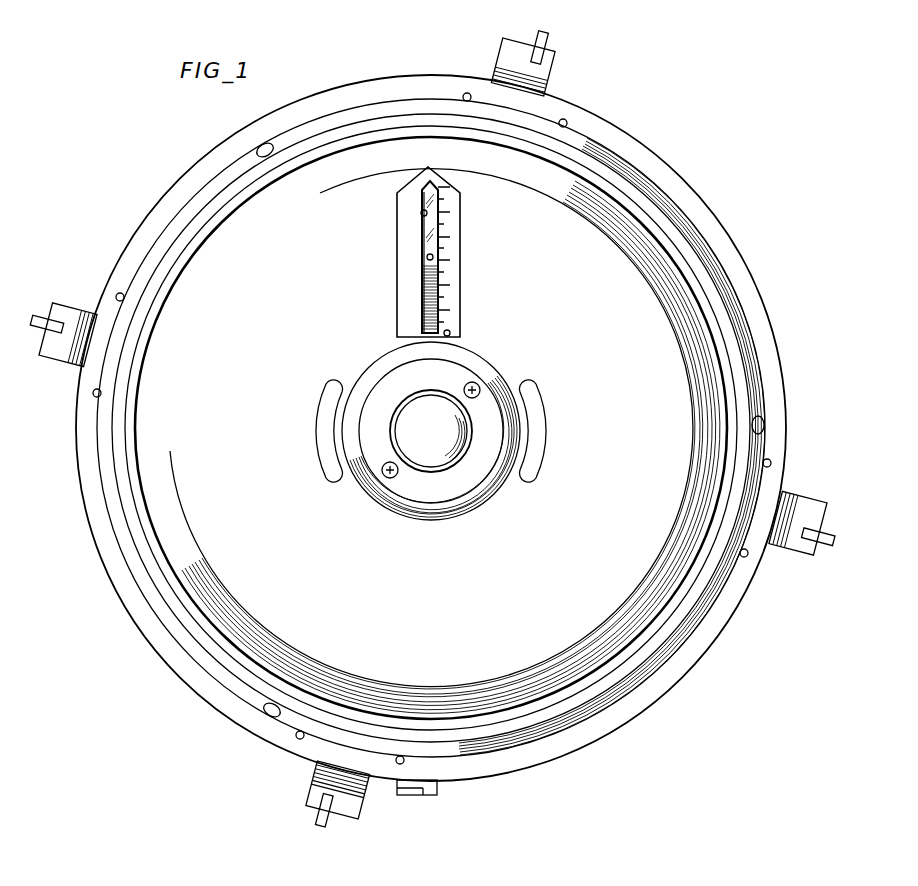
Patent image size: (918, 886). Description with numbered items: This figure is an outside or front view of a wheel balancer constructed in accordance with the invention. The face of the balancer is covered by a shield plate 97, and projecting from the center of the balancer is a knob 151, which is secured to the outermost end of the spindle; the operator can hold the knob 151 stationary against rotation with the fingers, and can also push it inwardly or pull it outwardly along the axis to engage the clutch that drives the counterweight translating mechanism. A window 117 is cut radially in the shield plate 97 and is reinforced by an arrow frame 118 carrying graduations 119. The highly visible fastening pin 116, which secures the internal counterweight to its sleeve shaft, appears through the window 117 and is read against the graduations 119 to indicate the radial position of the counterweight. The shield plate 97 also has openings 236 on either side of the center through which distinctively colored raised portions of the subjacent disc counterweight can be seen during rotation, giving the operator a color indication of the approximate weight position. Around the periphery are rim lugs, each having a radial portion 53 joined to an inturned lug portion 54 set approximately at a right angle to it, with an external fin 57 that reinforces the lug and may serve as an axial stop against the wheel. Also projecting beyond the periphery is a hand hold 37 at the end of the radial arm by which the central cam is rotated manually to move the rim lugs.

The shield plate 97 is at (356, 577).
The knob 151 is at (445, 424).
The openings 236 is at (321, 426).
The arrow frame 118 is at (455, 226).
The graduations 119 is at (446, 292).
The window 117 is at (422, 214).
The pin 116 is at (433, 257).
The radial portion 53 is at (320, 771).
The lug portion 54 is at (314, 797).
The external fin 57 is at (325, 820).
The hand hold 37 is at (404, 796).